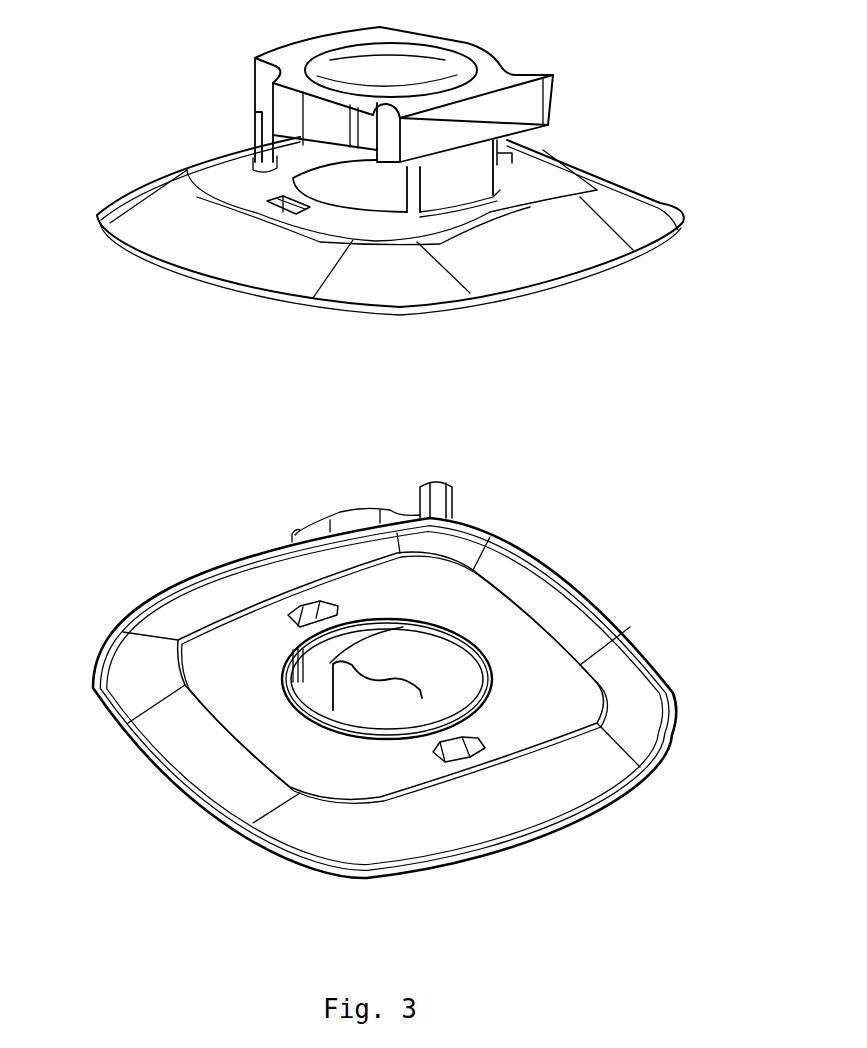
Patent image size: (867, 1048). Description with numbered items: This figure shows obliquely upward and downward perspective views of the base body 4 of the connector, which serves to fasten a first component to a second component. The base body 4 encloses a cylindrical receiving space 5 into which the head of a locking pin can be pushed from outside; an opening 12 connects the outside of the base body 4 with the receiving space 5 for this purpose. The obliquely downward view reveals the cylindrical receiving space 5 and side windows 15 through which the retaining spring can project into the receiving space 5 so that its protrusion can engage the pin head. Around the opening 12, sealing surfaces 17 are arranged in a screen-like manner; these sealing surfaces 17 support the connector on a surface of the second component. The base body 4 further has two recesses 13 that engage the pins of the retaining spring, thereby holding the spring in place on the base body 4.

The base body 4 is at (472, 44).
The opening 12 is at (368, 188).
The recesses 13 is at (293, 203).
The window 15 is at (318, 158).
The sealing surfaces 17 is at (537, 257).
The receiving space 5 is at (392, 662).